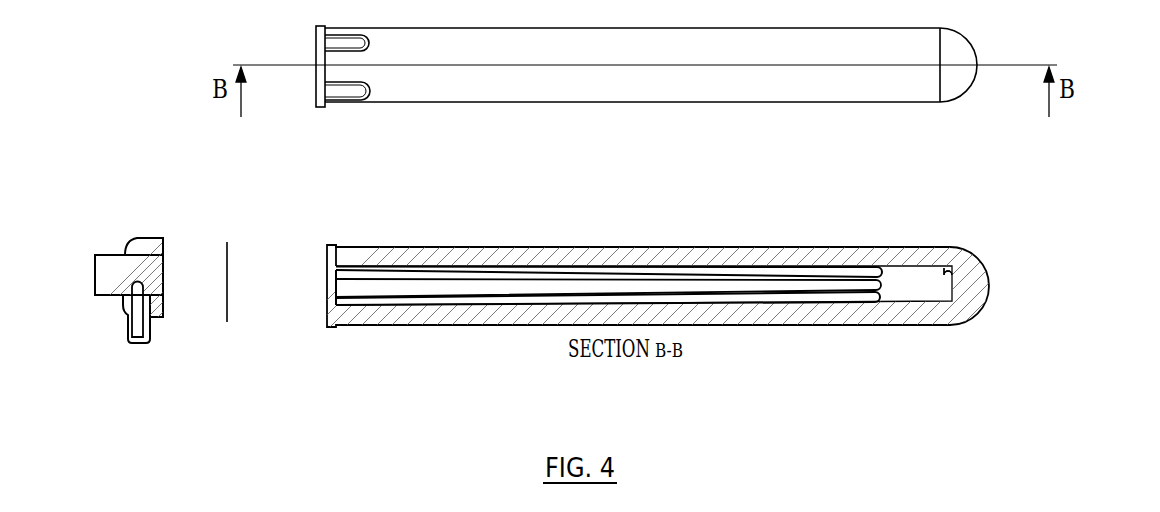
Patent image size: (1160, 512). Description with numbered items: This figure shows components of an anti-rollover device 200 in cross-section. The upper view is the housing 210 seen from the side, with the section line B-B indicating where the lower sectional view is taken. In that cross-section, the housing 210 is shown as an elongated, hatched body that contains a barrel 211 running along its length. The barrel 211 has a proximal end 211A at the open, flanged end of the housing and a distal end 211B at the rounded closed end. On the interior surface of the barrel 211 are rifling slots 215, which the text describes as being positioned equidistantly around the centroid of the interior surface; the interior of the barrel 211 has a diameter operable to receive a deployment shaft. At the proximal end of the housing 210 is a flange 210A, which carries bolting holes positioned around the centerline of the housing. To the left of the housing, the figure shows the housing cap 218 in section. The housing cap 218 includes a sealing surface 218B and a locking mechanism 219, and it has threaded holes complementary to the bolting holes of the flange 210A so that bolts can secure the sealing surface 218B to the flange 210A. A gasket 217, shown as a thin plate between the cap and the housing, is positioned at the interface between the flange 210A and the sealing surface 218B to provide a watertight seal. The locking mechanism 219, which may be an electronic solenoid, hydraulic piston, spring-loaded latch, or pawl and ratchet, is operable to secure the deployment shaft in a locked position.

The anti-rollover device 200 is at (1115, 207).
The housing 210 is at (517, 258).
The flange 210A is at (329, 247).
The barrel 211 is at (890, 285).
The proximal end of barrel 211A is at (326, 287).
The distal end of barrel 211B is at (943, 272).
The rifling slots 215 is at (697, 287).
The gasket 217 is at (225, 302).
The housing cap 218 is at (133, 240).
The sealing surface 218B is at (165, 257).
The locking mechanism 219 is at (135, 291).